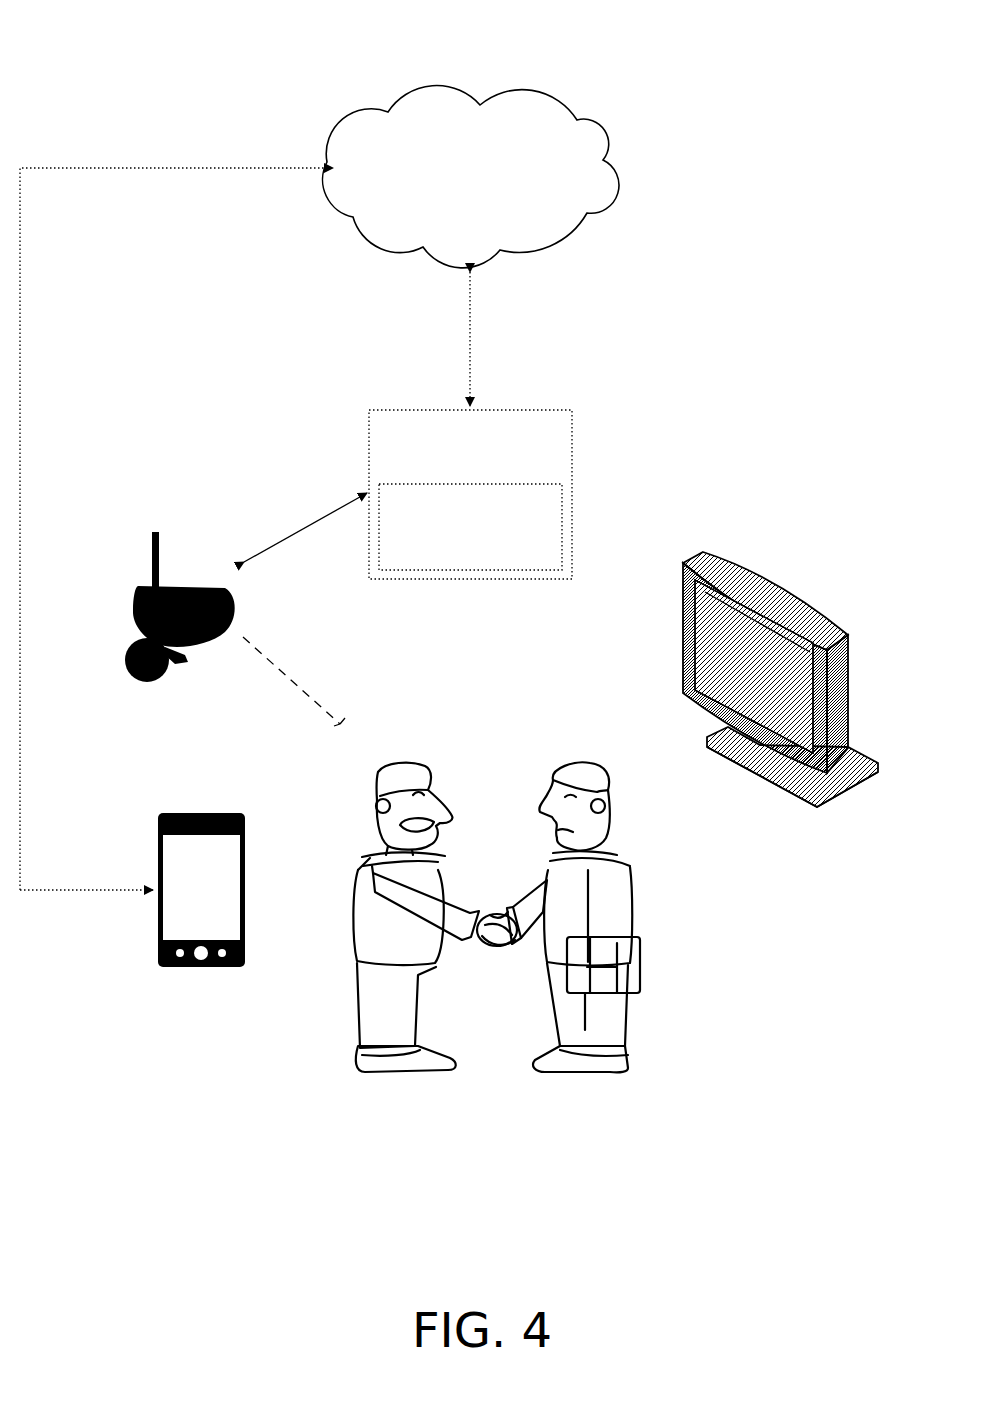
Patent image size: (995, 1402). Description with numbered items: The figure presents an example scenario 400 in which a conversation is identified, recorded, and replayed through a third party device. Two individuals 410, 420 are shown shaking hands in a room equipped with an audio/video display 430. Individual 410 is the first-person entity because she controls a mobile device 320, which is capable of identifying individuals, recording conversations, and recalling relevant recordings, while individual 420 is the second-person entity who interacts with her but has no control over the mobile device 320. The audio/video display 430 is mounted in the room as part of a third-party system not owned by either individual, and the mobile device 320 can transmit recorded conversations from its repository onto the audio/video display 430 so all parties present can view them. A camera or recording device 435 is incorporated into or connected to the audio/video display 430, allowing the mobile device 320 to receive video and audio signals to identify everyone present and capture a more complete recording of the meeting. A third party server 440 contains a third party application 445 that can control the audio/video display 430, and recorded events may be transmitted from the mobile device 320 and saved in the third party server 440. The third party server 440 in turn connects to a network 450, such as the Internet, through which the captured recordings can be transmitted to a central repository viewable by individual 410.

The example scenario 400 is at (85, 102).
The network 450 is at (487, 209).
The third party server 440 is at (488, 480).
The third party application 445 is at (488, 560).
The camera or recording device 435 is at (206, 526).
The audio/video display 430 is at (678, 552).
The mobile device 320 is at (155, 849).
The individual 410 is at (411, 759).
The individual 420 is at (584, 750).